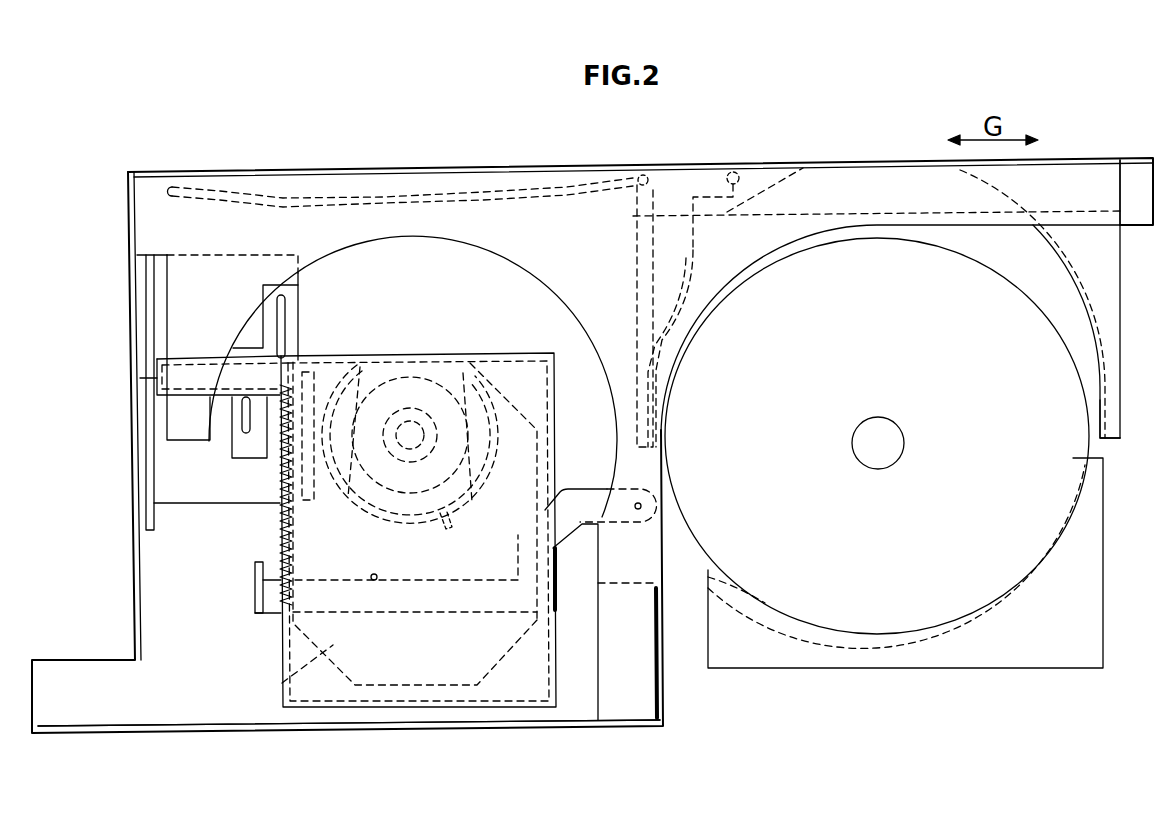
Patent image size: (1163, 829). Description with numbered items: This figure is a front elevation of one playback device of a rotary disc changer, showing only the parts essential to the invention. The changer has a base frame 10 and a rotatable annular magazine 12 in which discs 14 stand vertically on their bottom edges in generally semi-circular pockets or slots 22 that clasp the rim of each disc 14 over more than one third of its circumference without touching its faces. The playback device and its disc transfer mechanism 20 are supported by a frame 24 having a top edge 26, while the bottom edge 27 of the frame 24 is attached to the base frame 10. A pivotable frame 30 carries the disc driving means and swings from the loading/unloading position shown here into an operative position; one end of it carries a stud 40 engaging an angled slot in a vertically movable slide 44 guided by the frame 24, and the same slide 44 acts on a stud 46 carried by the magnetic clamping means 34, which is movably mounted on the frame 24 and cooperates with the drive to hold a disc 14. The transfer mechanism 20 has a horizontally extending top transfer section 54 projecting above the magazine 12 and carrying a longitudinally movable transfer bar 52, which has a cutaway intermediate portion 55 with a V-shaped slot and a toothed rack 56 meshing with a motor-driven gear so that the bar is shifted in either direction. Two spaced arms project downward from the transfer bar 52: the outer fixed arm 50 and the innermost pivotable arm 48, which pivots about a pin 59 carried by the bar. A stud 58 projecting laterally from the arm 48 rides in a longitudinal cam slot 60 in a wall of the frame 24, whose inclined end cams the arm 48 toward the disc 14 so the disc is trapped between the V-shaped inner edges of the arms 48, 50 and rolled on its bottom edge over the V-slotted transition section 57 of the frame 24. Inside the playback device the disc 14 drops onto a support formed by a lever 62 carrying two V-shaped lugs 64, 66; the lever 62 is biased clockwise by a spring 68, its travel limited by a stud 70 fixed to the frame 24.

The base frame 10 is at (191, 742).
The rotatable annular magazine 12 is at (1066, 624).
The disc 14 is at (1020, 547).
The disc transfer mechanism 20 is at (835, 204).
The pocket or slot 22 is at (942, 633).
The frame 24 is at (165, 221).
The top edge 26 is at (526, 172).
The bottom edge 27 is at (306, 727).
The pivotable frame 30 is at (292, 682).
The magnetic clamping means 34 is at (360, 470).
The stud 40 is at (133, 397).
The slide 44 is at (170, 477).
The stud 46 is at (316, 363).
The pivotable arm 48 is at (655, 245).
The fixed arm 50 is at (1100, 274).
The transfer bar 52 is at (900, 188).
The top transfer section 54 is at (1068, 190).
The cutaway intermediate portion 55 is at (693, 281).
The toothed rack 56 is at (1102, 393).
The transition section 57 is at (624, 586).
The stud 58 is at (647, 172).
The pin 59 is at (733, 172).
The cam slot 60 is at (399, 197).
The lever 62 is at (428, 597).
The V-shaped lug 64 is at (258, 584).
The V-shaped lug 66 is at (562, 600).
The spring 68 is at (280, 543).
The stud 70 is at (378, 576).